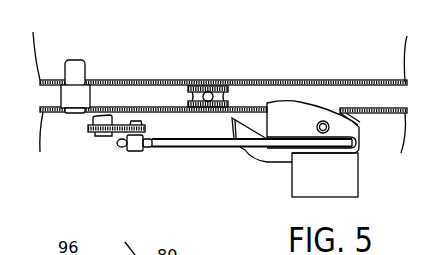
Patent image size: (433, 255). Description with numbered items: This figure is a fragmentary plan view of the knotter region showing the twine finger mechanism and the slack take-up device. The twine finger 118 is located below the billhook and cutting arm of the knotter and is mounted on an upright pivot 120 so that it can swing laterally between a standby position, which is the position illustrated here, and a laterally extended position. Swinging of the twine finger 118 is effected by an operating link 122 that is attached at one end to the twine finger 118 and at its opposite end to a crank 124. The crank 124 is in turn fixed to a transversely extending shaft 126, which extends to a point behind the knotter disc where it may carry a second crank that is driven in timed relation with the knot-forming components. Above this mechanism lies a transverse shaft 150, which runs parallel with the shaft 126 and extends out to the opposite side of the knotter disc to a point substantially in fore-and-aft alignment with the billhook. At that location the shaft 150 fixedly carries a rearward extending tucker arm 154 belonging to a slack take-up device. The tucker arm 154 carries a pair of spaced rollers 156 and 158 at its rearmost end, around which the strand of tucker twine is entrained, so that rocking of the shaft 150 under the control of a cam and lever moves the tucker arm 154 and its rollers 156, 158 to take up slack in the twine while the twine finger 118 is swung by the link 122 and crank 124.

The twine finger 118 is at (272, 160).
The upright pivot 120 is at (328, 122).
The operating link 122 is at (216, 148).
The crank 124 is at (150, 123).
The transversely extending shaft 126 is at (92, 121).
The transverse shaft 150 is at (72, 70).
The tucker arm 154 is at (122, 79).
The roller 156 is at (230, 92).
The roller 158 is at (193, 96).